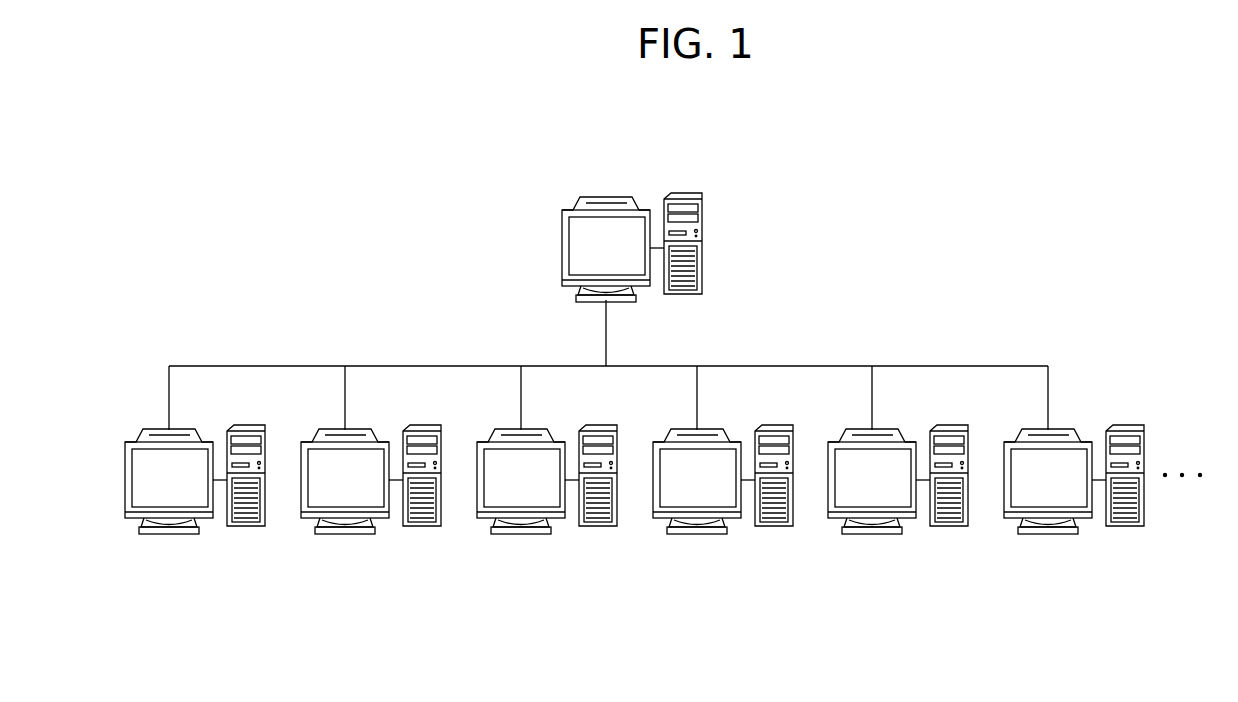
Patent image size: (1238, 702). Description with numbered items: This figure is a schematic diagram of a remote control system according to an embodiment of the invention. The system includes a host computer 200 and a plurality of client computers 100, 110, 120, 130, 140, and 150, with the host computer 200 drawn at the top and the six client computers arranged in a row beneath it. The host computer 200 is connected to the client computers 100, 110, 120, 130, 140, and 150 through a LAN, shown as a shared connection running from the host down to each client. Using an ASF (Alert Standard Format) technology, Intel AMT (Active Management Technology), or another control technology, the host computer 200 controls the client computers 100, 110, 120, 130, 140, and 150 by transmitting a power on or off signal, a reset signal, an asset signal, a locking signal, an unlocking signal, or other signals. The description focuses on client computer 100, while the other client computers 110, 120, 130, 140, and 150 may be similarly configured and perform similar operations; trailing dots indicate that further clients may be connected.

The host computer 200 is at (632, 220).
The client computer 100 is at (195, 510).
The client computer 110 is at (371, 510).
The client computer 120 is at (547, 510).
The client computer 130 is at (723, 509).
The client computer 140 is at (898, 509).
The client computer 150 is at (1074, 508).